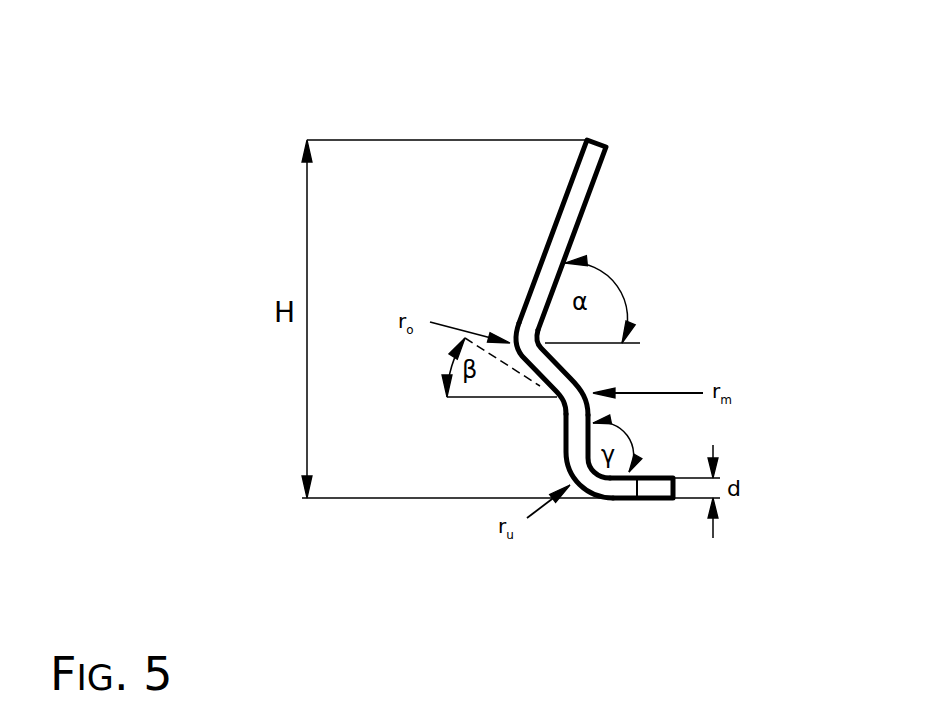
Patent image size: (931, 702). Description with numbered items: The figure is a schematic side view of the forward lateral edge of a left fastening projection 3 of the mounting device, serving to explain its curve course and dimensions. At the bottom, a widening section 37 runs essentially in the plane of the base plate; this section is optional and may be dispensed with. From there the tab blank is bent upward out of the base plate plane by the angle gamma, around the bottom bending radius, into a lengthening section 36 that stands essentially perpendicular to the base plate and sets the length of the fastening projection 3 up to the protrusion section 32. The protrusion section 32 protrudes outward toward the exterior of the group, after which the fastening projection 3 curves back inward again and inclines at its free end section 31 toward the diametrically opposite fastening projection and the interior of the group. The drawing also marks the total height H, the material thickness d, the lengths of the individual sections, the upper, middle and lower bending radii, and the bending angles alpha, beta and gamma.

The fastening projection 3 is at (712, 149).
The free end section 31 is at (589, 141).
The protrusion section 32 is at (580, 353).
The lengthening section 36 is at (566, 413).
The widening section 37 is at (627, 483).